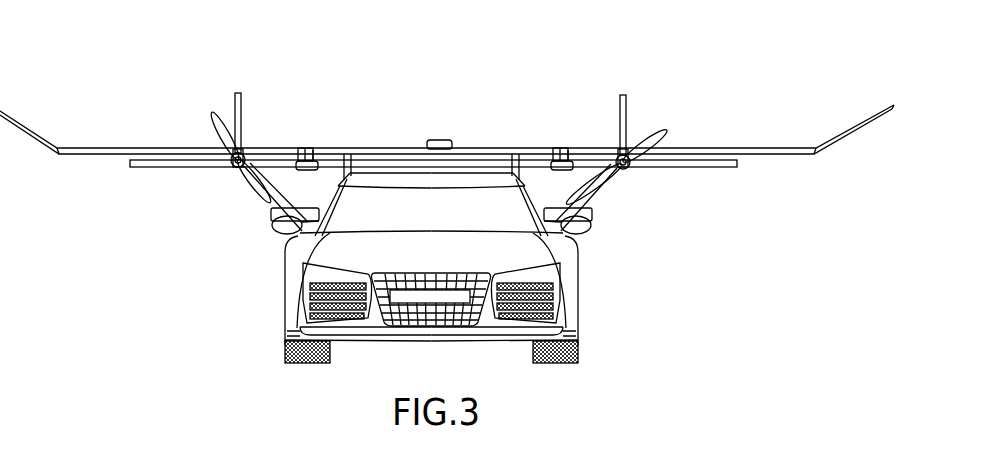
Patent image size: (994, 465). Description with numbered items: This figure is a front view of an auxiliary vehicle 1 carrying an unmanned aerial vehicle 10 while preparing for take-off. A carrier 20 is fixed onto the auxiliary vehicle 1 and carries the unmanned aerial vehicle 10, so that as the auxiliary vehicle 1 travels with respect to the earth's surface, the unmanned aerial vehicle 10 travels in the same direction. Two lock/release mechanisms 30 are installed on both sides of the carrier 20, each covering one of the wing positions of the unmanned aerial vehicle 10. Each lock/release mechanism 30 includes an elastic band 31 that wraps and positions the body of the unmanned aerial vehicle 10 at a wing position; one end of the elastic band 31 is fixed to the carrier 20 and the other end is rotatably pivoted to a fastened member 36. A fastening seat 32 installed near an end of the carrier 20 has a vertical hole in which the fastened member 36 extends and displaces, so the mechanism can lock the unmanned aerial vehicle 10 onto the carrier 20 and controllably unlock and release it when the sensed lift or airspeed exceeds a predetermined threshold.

The auxiliary vehicle 1 is at (590, 276).
The unmanned aerial vehicle 10 is at (186, 140).
The carrier 20 is at (177, 168).
The lock/release mechanism 30 is at (343, 76).
The elastic band 31 is at (300, 150).
The fastening seat 32 is at (311, 156).
The fastened member 36 is at (306, 161).